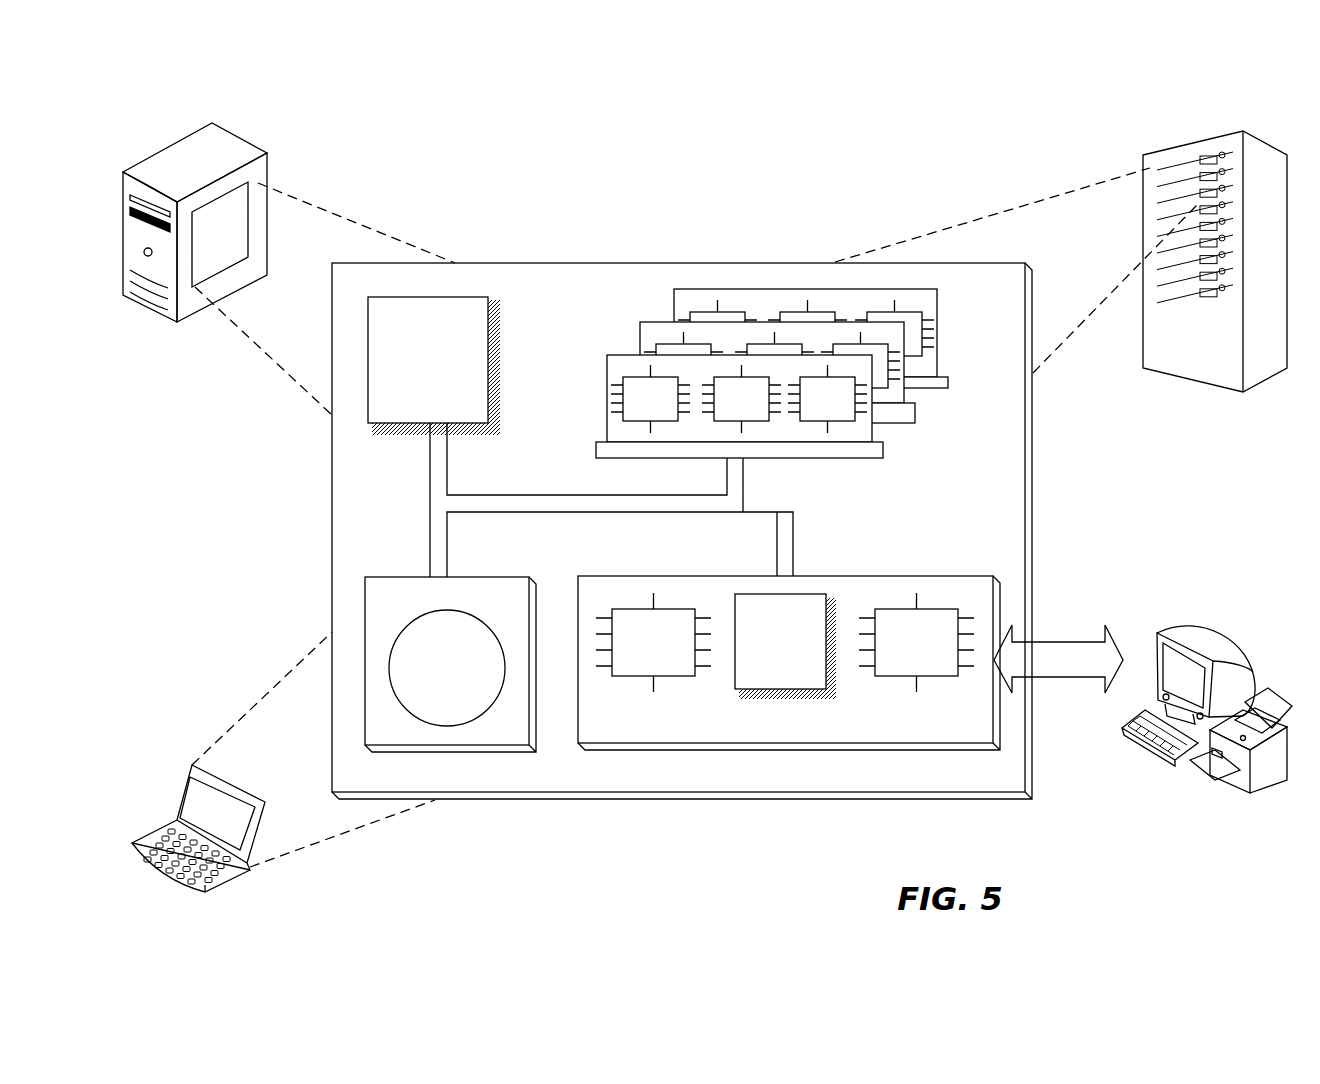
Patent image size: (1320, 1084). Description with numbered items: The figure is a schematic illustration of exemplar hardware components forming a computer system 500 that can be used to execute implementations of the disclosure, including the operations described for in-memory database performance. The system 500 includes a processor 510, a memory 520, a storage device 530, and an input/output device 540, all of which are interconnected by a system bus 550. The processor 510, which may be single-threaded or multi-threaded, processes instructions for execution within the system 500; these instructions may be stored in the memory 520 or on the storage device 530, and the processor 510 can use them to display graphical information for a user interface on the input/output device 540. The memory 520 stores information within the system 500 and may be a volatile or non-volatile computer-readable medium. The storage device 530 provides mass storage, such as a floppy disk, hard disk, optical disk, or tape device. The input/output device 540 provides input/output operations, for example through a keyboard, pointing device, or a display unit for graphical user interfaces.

The system 500 is at (509, 147).
The processor 510 is at (434, 366).
The memory 520 is at (941, 422).
The storage device 530 is at (450, 664).
The input/output device 540 is at (1157, 632).
The system bus 550 is at (612, 512).